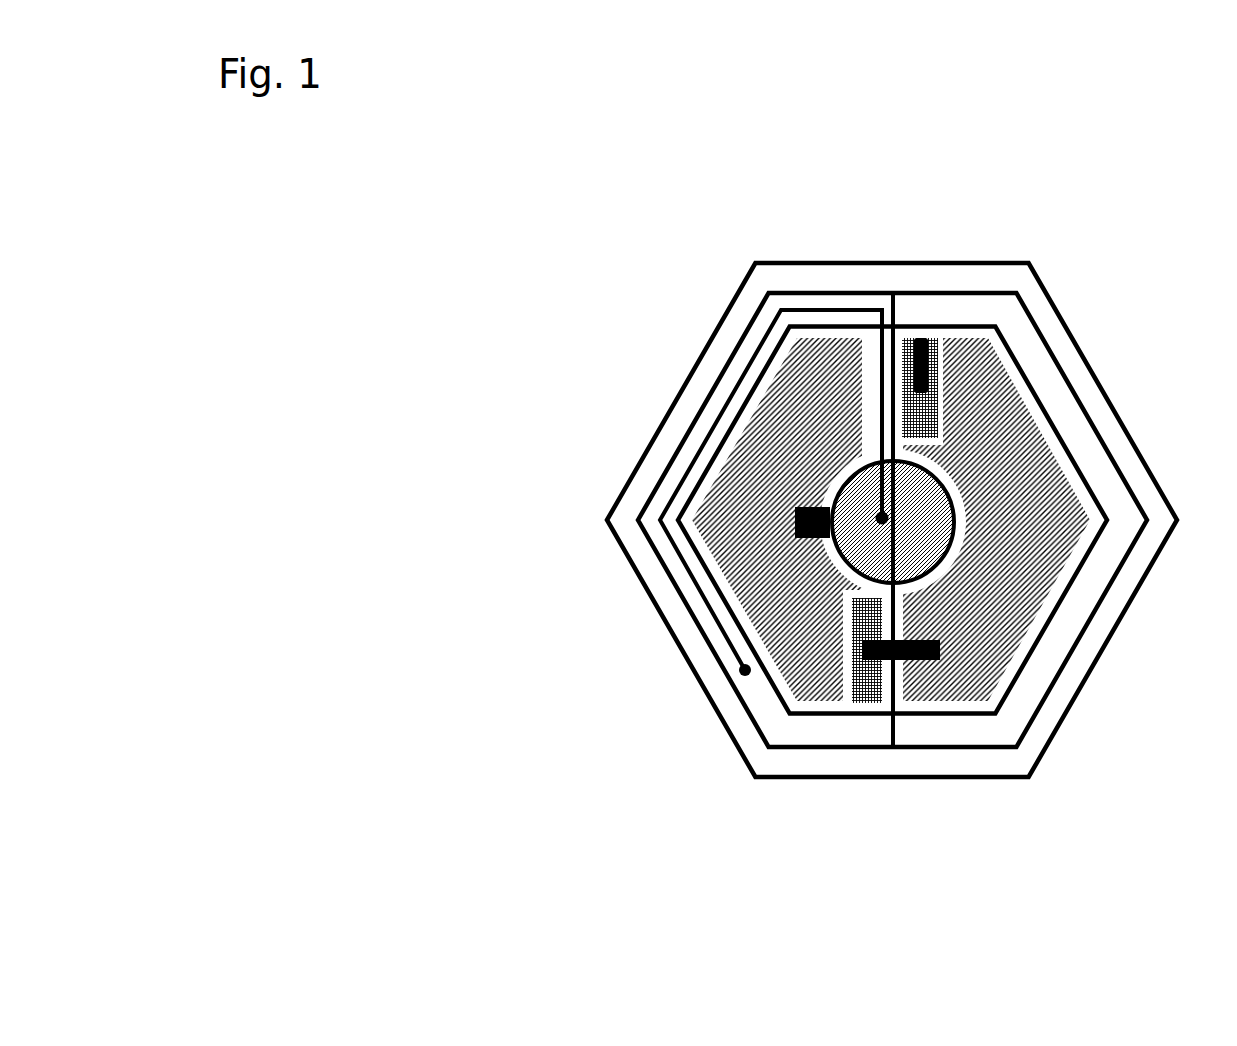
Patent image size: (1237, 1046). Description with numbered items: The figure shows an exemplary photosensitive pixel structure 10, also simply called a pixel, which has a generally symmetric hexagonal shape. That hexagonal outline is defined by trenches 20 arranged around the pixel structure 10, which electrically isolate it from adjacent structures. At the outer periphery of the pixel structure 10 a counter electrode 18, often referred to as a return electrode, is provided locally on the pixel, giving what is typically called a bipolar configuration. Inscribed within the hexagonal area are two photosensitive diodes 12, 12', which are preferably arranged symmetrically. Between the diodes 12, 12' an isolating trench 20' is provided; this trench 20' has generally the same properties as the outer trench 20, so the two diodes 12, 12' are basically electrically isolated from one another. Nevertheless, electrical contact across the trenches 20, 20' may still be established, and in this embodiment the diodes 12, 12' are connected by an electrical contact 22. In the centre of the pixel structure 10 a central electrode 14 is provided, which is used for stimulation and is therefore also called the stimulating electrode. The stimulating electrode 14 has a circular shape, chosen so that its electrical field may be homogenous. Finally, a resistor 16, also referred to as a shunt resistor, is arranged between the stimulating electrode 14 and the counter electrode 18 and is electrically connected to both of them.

The photosensitive pixel structure 10 is at (522, 590).
The photosensitive diode 12 is at (777, 431).
The photosensitive diode 12' is at (1043, 593).
The central electrode 14 is at (932, 512).
The resistor 16 is at (884, 396).
The counter electrode 18 is at (706, 367).
The trench 20 is at (689, 493).
The isolating trench 20' is at (892, 601).
The electrical contact 22 is at (878, 650).